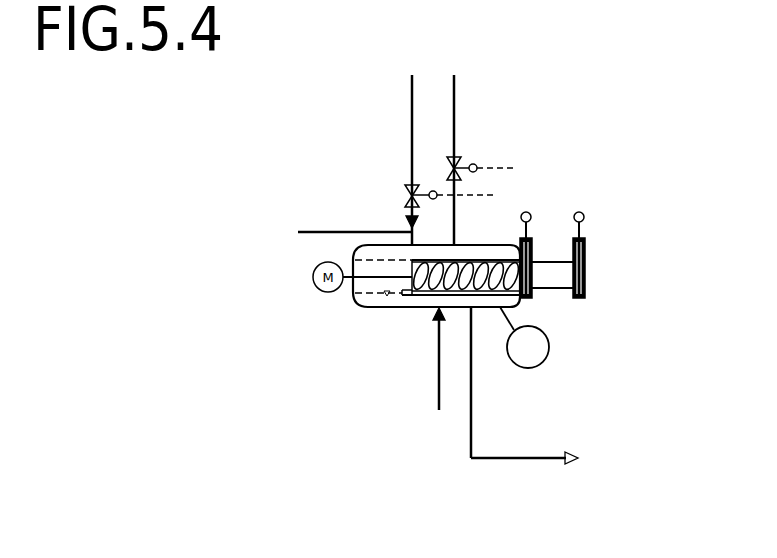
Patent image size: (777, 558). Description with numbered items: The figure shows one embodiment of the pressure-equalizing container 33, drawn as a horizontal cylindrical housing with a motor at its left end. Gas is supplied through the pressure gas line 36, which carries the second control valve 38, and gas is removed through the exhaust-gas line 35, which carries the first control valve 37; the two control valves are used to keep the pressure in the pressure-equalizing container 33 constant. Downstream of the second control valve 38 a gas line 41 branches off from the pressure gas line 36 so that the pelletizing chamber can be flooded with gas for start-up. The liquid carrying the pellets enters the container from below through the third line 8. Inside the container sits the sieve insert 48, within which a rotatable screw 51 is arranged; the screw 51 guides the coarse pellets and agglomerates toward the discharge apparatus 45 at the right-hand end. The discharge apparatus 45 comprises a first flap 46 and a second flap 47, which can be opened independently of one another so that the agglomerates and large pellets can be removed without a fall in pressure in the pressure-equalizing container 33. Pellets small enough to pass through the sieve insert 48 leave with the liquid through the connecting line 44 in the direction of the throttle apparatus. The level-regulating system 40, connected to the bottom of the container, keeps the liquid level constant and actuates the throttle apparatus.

The third line 8 is at (439, 392).
The pressure-equalizing container 33 is at (483, 243).
The exhaust-gas line 35 is at (454, 120).
The pressure gas line 36 is at (412, 122).
The first control valve 37 is at (458, 158).
The second control valve 38 is at (408, 186).
The level-regulating system 40 is at (515, 367).
The gas line 41 is at (318, 232).
The connecting line 44 is at (532, 460).
The discharge apparatus 45 is at (552, 282).
The first flap 46 is at (532, 246).
The second flap 47 is at (585, 244).
The sieve insert 48 is at (403, 297).
The rotatable screw 51 is at (433, 292).